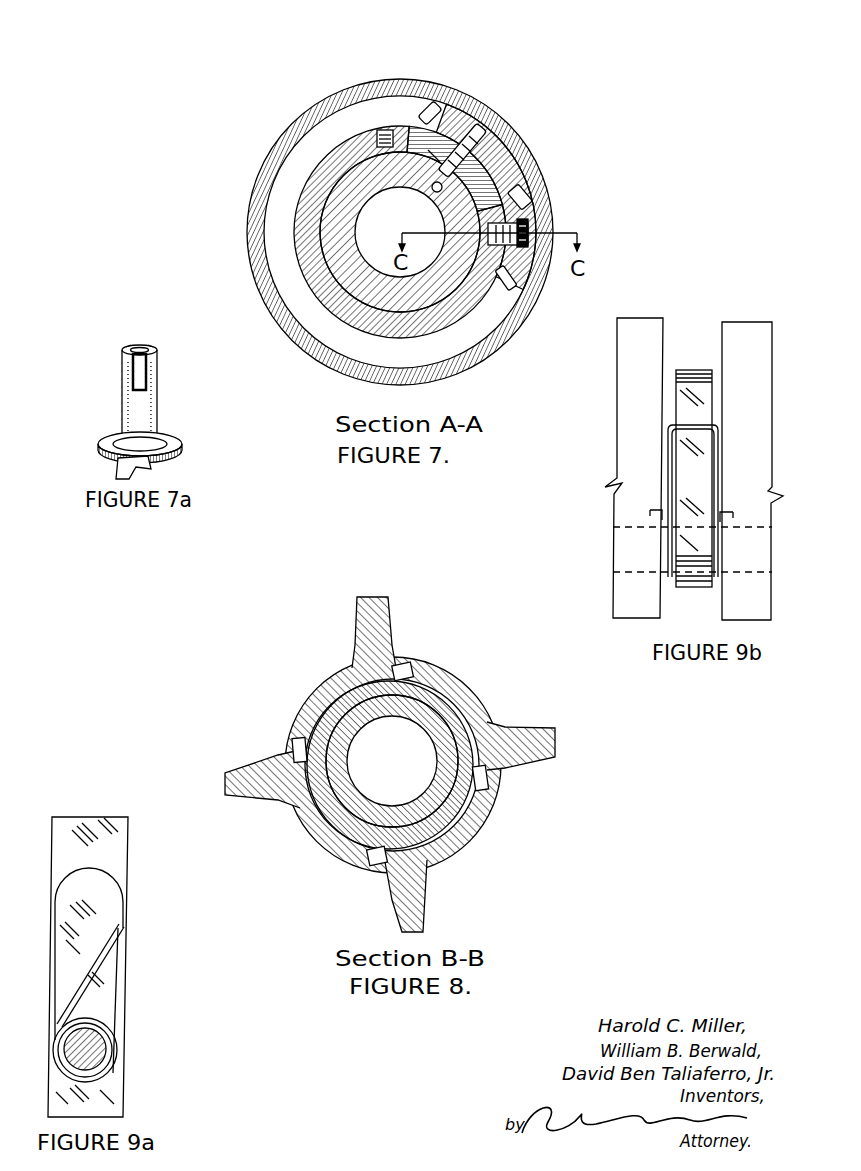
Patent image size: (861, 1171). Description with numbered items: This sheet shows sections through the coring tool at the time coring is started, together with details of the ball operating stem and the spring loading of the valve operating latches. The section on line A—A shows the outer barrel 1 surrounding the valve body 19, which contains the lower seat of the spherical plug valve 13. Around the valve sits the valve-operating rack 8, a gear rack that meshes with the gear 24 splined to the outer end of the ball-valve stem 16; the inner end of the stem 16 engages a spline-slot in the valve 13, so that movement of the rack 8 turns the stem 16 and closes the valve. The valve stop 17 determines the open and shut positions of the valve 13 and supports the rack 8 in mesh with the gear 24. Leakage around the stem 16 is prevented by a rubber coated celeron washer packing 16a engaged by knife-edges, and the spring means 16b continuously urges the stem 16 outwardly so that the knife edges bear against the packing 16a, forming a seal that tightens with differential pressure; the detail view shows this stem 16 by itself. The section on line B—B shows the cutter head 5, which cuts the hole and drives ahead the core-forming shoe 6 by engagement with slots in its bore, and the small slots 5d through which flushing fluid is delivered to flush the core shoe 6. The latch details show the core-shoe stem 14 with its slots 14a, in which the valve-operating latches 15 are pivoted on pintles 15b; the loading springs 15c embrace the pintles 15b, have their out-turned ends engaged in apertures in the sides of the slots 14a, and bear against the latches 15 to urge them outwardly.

In FIG. 7, the outer barrel 1 is at (287, 128).
In FIG. 7, the spherical plug valve 13 is at (347, 137).
In FIG. 7, the valve body 19 is at (298, 197).
In FIG. 7, the valve-operating rack 8 is at (527, 180).
In FIG. 7, the ball-valve stem 16 is at (410, 123).
In FIG. 7a, the ball-valve stem 16 is at (138, 398).
In FIG. 7, the washer packing 16a is at (428, 147).
In FIG. 7, the spring means 16b is at (487, 130).
In FIG. 7, the gear 24 is at (433, 157).
In FIG. 7, the valve stop 17 is at (523, 212).
In FIG. 8, the cutter head 5 is at (288, 722).
In FIG. 8, the small slots 5d is at (306, 677).
In FIG. 8, the core-forming shoe 6 is at (448, 707).
In FIG. 9b, the core-shoe stem 14 is at (638, 366).
In FIG. 8, the core-shoe stem 14 is at (455, 733).
In FIG. 9a, the core-shoe stem 14 is at (103, 852).
In FIG. 9b, the slots 14a is at (697, 353).
In FIG. 9b, the valve-operating latches 15 is at (685, 413).
In FIG. 9a, the valve-operating latches 15 is at (88, 890).
In FIG. 9b, the pintles 15b is at (635, 553).
In FIG. 9a, the pintles 15b is at (88, 1050).
In FIG. 9b, the loading springs 15c is at (668, 450).
In FIG. 9a, the loading springs 15c is at (115, 942).